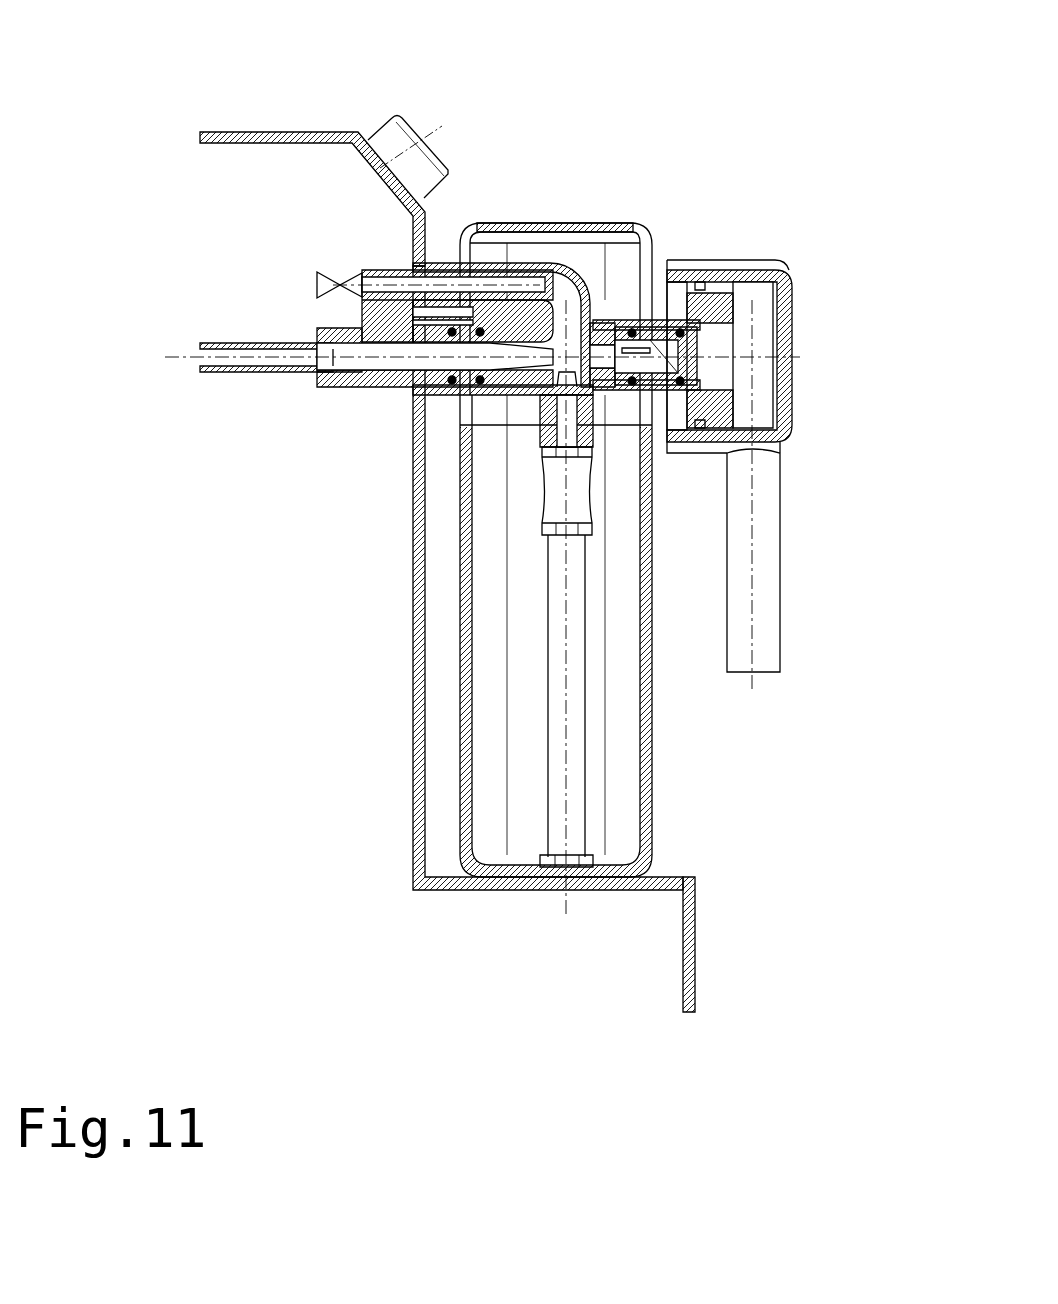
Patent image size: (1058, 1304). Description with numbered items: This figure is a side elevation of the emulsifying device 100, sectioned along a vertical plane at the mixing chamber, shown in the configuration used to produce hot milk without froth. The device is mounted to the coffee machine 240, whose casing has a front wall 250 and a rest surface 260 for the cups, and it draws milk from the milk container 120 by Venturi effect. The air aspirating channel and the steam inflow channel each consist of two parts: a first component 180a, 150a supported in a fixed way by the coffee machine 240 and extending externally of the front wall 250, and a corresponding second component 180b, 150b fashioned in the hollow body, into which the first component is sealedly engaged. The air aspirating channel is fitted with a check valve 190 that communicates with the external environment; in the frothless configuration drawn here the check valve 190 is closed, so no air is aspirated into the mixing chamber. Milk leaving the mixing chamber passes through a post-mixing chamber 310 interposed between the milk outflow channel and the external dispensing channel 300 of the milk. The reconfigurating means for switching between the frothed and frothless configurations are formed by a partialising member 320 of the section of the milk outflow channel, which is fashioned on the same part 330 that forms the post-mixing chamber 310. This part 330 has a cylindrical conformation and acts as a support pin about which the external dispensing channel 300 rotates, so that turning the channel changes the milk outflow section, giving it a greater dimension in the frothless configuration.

The emulsifying device 100 is at (597, 240).
The milk container 120 is at (647, 790).
The first component of the steam inflow channel 150a is at (373, 365).
The second component of the steam inflow channel 150b is at (497, 395).
The first component of the air aspirating channel 180a is at (377, 265).
The second component of the air aspirating channel 180b is at (518, 270).
The check valve 190 is at (317, 303).
The coffee machine 240 is at (245, 106).
The front wall 250 is at (416, 762).
The rest surface 260 is at (690, 878).
The external dispensing channel 300 is at (772, 570).
The post-mixing chamber 310 is at (680, 332).
The partialising member 320 is at (700, 388).
The part forming the post-mixing chamber 330 is at (653, 392).